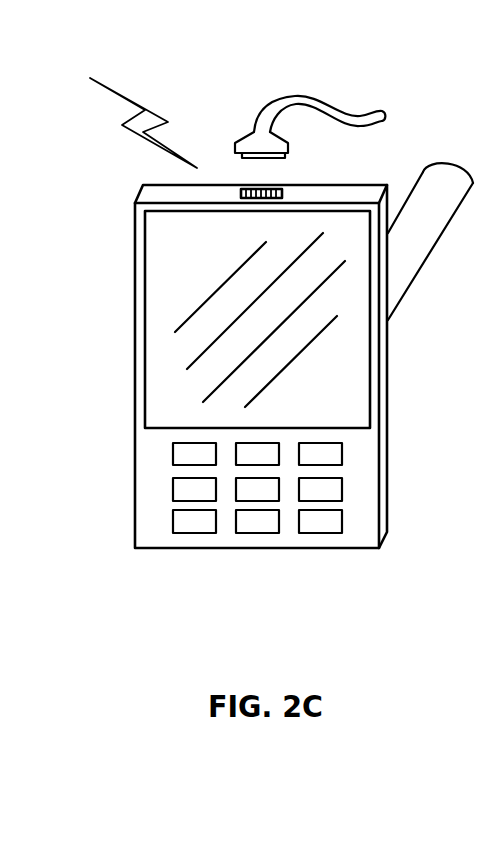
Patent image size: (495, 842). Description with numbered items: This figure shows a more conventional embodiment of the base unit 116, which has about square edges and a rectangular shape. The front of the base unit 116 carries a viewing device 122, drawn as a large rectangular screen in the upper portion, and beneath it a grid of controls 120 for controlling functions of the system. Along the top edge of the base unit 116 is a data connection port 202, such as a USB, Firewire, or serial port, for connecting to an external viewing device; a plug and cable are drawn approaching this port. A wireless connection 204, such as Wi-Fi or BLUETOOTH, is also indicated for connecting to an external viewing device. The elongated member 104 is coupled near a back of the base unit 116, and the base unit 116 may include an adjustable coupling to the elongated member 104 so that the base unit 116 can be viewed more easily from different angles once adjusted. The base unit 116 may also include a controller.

The elongated member 104 is at (417, 253).
The base unit 116 is at (412, 548).
The controls 120 is at (180, 487).
The viewing device 122 is at (153, 397).
The data connection port 202 is at (241, 188).
The wireless connection 204 is at (122, 127).